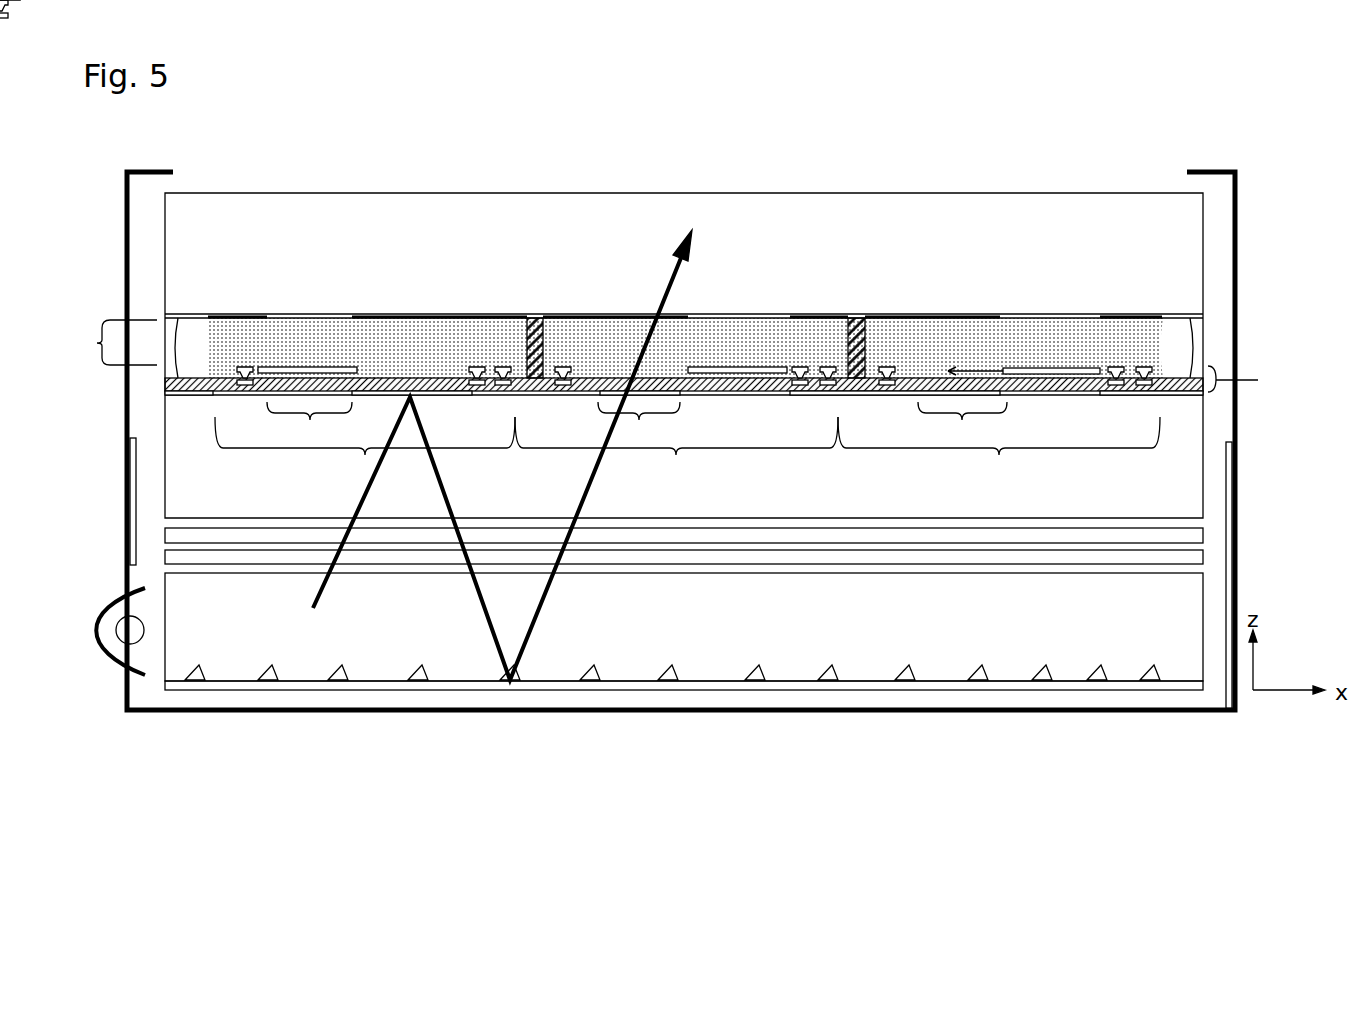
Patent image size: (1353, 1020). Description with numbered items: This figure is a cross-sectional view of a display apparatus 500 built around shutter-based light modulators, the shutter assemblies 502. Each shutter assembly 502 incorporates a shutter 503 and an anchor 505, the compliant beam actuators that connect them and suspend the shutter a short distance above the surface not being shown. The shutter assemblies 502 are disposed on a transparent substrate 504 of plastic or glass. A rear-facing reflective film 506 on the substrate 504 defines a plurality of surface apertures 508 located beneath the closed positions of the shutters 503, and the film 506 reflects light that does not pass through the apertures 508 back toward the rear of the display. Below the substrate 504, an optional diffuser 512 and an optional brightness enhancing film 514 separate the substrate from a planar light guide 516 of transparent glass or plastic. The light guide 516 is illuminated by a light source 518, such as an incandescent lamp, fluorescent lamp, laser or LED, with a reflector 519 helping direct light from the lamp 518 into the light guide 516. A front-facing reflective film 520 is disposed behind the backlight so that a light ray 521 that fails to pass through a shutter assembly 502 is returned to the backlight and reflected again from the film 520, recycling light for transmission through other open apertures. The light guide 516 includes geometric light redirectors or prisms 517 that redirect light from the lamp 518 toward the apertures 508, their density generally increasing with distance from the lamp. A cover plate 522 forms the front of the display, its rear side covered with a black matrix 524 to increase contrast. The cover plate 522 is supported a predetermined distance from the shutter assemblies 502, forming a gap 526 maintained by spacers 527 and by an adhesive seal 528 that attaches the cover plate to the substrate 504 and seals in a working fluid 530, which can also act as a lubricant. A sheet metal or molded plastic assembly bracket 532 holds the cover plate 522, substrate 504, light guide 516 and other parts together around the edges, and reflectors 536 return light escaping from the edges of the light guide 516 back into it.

The display apparatus 500 is at (653, 396).
The shutter assembly 502 is at (759, 424).
The shutter 503 is at (334, 372).
The transparent substrate 504 is at (684, 416).
The anchor 505 is at (247, 367).
The reflective film 506 is at (497, 397).
The surface aperture 508 is at (637, 426).
The diffuser 512 is at (1183, 537).
The brightness enhancing film 514 is at (1183, 562).
The light guide 516 is at (684, 627).
The prisms 517 is at (1157, 668).
The light source 518 is at (128, 612).
The reflector 519 is at (122, 660).
The front-facing reflective film 520 is at (368, 692).
The light ray 521 is at (668, 272).
The cover plate 522 is at (684, 253).
The black matrix 524 is at (245, 316).
The gap 526 is at (106, 342).
The spacer 527 is at (546, 317).
The adhesive seal 528 is at (178, 322).
The working fluid 530 is at (684, 348).
The assembly bracket 532 is at (150, 170).
The reflectors 536 is at (140, 437).